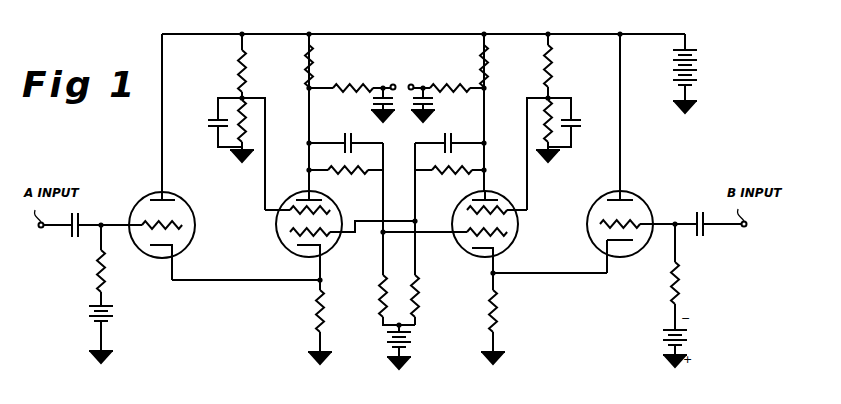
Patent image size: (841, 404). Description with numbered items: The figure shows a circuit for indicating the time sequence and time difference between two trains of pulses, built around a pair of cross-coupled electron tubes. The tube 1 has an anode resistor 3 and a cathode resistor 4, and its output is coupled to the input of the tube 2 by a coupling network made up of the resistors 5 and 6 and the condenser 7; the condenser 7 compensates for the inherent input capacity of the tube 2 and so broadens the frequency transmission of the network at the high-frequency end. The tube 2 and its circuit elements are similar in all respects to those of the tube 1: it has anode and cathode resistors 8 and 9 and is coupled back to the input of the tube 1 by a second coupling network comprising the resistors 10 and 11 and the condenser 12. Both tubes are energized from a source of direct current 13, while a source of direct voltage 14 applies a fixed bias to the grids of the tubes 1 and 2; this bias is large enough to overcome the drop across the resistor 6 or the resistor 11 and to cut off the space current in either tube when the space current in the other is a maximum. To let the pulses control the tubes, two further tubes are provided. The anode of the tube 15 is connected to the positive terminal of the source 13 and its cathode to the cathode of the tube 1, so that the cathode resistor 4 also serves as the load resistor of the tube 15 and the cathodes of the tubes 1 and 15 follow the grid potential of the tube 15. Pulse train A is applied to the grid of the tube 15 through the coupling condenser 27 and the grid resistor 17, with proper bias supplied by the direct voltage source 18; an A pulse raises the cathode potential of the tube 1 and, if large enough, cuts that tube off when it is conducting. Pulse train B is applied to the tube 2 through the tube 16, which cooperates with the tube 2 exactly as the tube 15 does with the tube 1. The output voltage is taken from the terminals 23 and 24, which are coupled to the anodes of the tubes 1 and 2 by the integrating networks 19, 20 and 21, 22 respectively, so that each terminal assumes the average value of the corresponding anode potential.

The tube 1 is at (332, 214).
The tube 2 is at (516, 233).
The anode resistor 3 is at (300, 73).
The cathode resistor 4 is at (315, 316).
The resistor 5 is at (346, 181).
The resistor 6 is at (374, 302).
The condenser 7 is at (354, 140).
The anode resistor 8 is at (488, 73).
The cathode resistor 9 is at (501, 315).
The resistor 10 is at (434, 182).
The resistor 11 is at (421, 297).
The condenser 12 is at (455, 141).
The source of direct current 13 is at (702, 77).
The source of direct voltage 14 is at (411, 341).
The tube 15 is at (195, 225).
The tube 16 is at (641, 206).
The grid resistor 17 is at (103, 282).
The direct voltage source 18 is at (112, 328).
The integrating network 19 is at (348, 95).
The integrating network 20 is at (372, 111).
The integrating network 21 is at (448, 85).
The integrating network 22 is at (435, 106).
The terminal 23 is at (392, 84).
The terminal 24 is at (413, 85).
The coupling condenser 27 is at (68, 230).